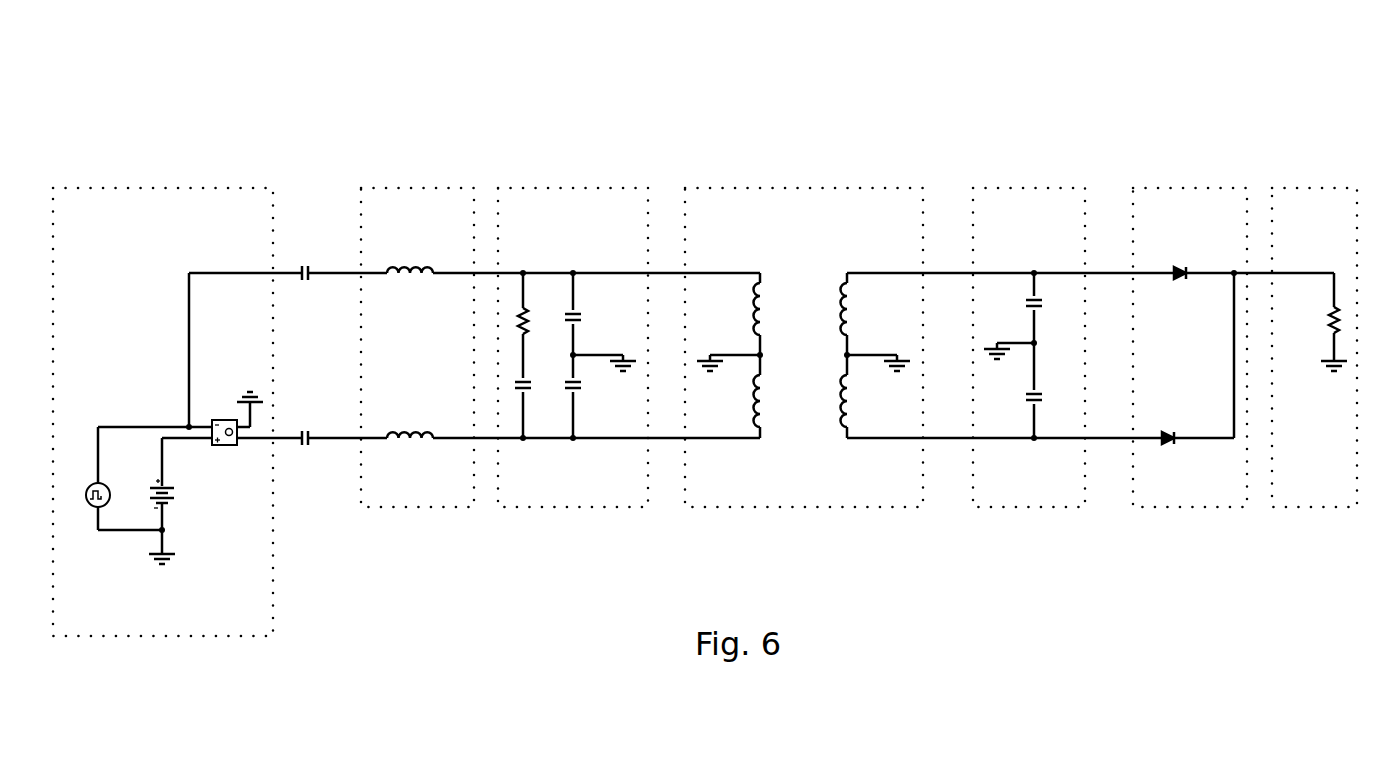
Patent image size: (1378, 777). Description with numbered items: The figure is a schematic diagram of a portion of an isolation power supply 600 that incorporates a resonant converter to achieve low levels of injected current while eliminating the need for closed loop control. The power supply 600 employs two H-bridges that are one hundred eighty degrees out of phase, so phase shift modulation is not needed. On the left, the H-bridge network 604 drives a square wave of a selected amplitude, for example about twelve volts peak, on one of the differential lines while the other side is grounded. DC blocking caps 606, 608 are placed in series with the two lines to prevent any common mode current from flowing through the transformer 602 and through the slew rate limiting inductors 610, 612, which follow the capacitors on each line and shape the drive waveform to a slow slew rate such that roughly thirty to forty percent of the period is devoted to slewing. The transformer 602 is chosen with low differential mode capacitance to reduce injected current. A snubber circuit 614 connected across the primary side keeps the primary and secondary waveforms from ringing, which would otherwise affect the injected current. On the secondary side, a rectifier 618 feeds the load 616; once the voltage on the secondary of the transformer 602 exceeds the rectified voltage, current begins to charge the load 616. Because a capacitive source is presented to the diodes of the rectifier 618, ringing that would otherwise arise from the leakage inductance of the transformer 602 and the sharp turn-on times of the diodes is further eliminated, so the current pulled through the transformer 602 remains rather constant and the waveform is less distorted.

The isolation power supply 600 is at (205, 122).
The transformer 602 is at (820, 507).
The H-bridge network 604 is at (204, 636).
The DC blocking cap 606 is at (311, 212).
The DC blocking cap 608 is at (305, 485).
The slew rate limiting inductor 610 is at (405, 310).
The slew rate limiting inductor 612 is at (400, 485).
The snubber circuit 614 is at (548, 507).
The load 616 is at (1343, 507).
The rectifier 618 is at (1178, 507).